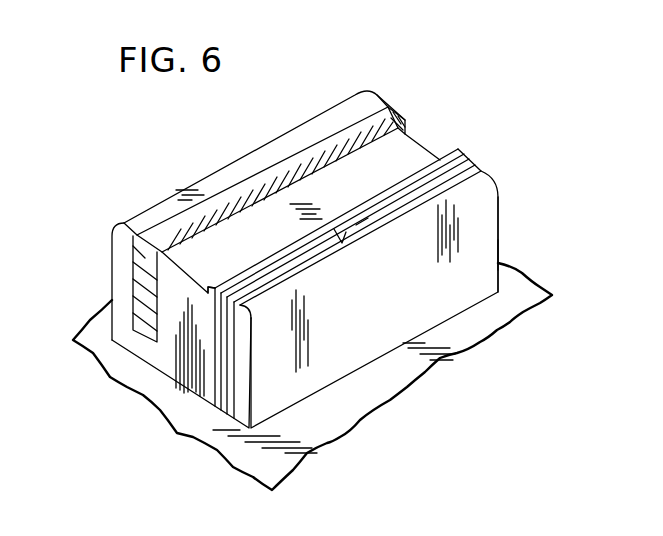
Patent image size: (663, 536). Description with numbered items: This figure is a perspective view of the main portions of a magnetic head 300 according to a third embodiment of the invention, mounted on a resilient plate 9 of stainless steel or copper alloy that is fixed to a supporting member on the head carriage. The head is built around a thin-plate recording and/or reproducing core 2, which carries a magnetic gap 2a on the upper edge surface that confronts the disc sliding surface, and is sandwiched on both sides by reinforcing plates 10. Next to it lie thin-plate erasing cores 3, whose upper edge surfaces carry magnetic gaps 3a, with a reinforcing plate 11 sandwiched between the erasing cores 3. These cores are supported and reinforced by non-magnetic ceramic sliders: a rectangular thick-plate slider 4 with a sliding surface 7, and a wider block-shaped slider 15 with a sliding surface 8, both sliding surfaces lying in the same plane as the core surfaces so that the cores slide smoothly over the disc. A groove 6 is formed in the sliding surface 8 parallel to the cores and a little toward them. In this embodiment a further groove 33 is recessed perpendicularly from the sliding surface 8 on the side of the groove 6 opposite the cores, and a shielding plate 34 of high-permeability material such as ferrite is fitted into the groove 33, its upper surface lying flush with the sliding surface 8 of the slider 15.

The recording and/or reproducing core 2 is at (470, 165).
The magnetic gap 2a is at (366, 216).
The erasing cores 3 is at (292, 258).
The magnetic gaps 3a is at (340, 236).
The slider 4 is at (484, 221).
The groove 6 is at (425, 157).
The sliding surface 7 is at (252, 308).
The sliding surface 8 is at (247, 163).
The resilient plate 9 is at (410, 372).
The reinforcing plates 10 is at (408, 193).
The reinforcing plate 11 is at (263, 277).
The slider 15 is at (172, 366).
The groove 33 is at (140, 277).
The shielding plate 34 is at (390, 115).
The magnetic head 300 is at (502, 250).